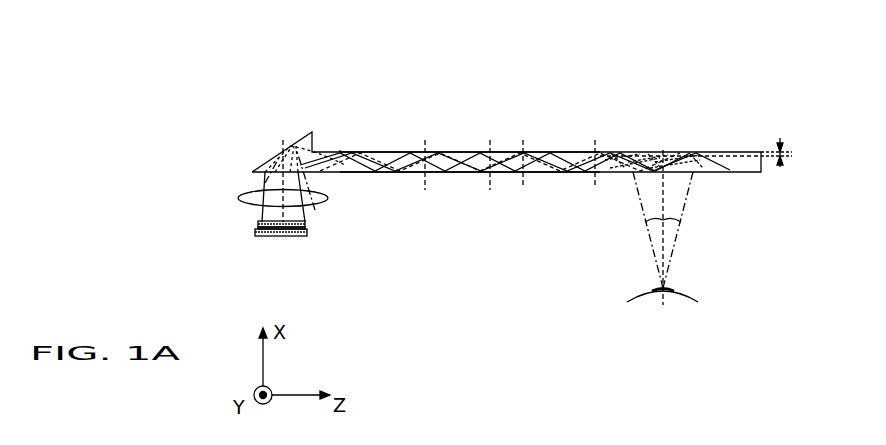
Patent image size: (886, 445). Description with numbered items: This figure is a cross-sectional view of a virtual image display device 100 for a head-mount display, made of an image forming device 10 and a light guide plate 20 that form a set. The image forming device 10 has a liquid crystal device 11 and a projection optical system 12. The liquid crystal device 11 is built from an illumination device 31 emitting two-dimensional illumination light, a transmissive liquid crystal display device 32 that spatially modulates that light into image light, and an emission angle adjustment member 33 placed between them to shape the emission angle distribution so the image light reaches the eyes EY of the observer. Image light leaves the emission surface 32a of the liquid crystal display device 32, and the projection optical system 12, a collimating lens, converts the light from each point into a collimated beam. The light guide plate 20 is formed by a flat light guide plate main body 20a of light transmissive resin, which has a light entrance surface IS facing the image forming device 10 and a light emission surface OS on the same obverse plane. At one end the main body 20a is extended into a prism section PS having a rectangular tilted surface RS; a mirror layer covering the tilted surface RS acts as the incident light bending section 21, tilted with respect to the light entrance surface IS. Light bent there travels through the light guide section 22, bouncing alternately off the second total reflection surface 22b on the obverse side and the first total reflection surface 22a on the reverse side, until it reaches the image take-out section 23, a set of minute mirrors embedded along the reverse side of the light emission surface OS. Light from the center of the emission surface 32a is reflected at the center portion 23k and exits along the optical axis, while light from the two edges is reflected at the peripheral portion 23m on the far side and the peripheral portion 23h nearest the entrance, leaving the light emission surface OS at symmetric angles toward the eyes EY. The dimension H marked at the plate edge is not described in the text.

The virtual image display device 100 is at (276, 61).
The image forming device 10 is at (219, 223).
The liquid crystal device 11 is at (266, 235).
The projection optical system 12 is at (247, 194).
The light guide plate 20 is at (488, 137).
The light guide plate main body 20a is at (467, 152).
The incident light bending section 21 is at (270, 160).
The light guide section 22 is at (535, 152).
The first total reflection surface 22a is at (340, 152).
The second total reflection surface 22b is at (498, 172).
The image take-out section 23 is at (680, 121).
The peripheral portion 23h is at (618, 152).
The center portion 23k is at (653, 152).
The peripheral portion 23m is at (700, 152).
The illumination device 31 is at (297, 237).
The liquid crystal display device 32 is at (236, 246).
The emission surface 32a is at (258, 222).
The emission angle adjustment member 33 is at (310, 234).
The prism section PS is at (300, 142).
The tilted surface RS is at (285, 150).
The light entrance surface IS is at (300, 177).
The light emission surface OS is at (672, 173).
The eyes EY is at (632, 296).
The thickness H is at (784, 155).